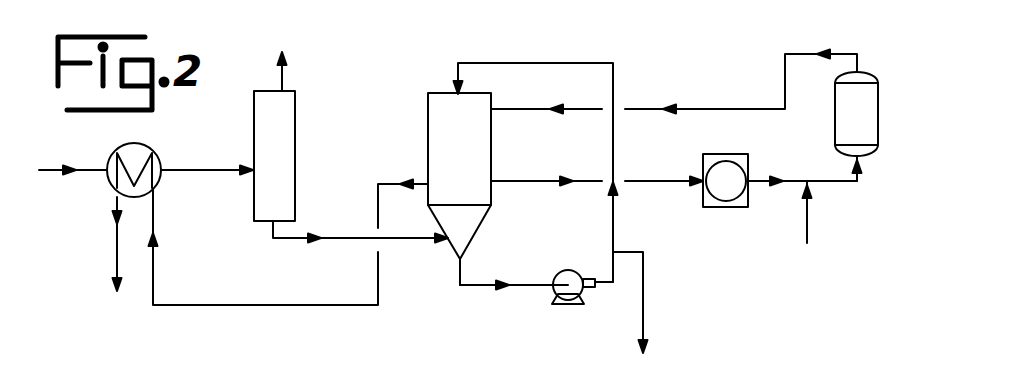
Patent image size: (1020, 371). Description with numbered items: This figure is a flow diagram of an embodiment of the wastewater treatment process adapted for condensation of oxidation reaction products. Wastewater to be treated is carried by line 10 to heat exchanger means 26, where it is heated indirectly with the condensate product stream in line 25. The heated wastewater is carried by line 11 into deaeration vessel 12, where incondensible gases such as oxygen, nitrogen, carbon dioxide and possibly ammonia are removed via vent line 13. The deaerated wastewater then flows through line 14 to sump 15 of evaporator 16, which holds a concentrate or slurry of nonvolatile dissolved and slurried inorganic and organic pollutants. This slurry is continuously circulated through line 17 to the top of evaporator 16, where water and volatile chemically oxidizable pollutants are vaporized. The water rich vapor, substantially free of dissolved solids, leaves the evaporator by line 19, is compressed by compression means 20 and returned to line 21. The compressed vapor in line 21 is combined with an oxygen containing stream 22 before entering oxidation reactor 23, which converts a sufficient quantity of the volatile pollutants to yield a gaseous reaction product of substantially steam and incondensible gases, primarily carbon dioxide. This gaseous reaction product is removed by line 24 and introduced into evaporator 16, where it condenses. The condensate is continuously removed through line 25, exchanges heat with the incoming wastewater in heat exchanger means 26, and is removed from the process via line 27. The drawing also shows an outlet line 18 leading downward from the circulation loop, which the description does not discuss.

The line 10 is at (51, 168).
The line 11 is at (193, 168).
The deaeration vessel 12 is at (297, 123).
The vent line 13 is at (290, 65).
The line 14 is at (292, 236).
The sump 15 is at (483, 220).
The evaporator 16 is at (428, 133).
The line 17 is at (555, 63).
The product outlet line 18 is at (645, 298).
The line 19 is at (508, 180).
The compression means 20 is at (722, 207).
The line 21 is at (760, 180).
The oxygen containing stream 22 is at (808, 220).
The oxidation reactor 23 is at (835, 115).
The line 24 is at (843, 53).
The line 25 is at (207, 304).
The heat exchanger means 26 is at (148, 148).
The line 27 is at (113, 253).